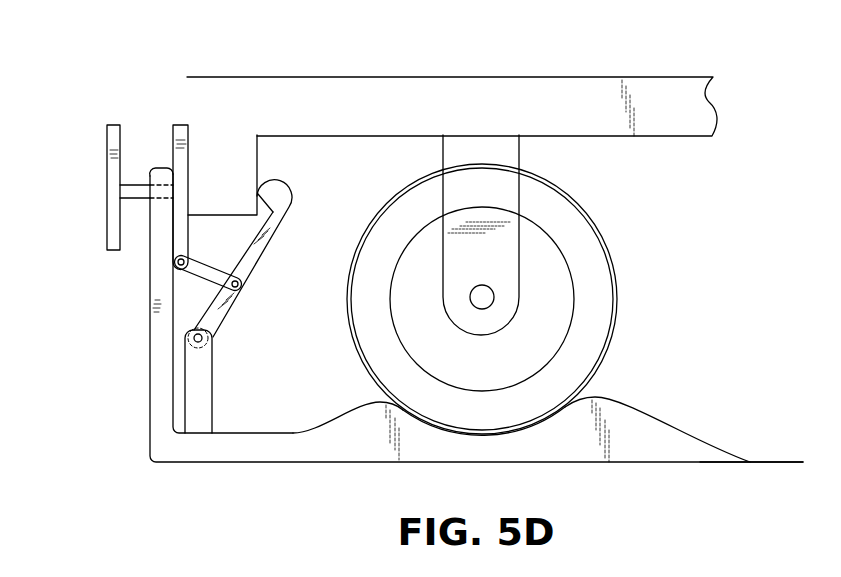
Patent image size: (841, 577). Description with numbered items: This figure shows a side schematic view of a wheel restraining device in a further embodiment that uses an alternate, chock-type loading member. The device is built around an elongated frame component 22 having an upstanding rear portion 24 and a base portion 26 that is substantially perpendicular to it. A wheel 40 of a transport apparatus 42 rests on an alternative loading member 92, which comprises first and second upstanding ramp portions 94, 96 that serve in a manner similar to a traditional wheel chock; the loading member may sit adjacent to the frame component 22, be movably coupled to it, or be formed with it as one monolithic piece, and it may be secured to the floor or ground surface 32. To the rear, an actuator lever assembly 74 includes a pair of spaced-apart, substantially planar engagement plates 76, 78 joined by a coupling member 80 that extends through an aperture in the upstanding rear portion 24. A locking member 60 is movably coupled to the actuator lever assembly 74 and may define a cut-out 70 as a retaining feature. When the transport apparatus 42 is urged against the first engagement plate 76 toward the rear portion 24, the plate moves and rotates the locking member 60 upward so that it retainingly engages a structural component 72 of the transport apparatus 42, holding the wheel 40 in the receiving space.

The elongated frame component 22 is at (136, 419).
The upstanding rear portion 24 is at (157, 317).
The base portion 26 is at (182, 450).
The ground surface 32 is at (773, 462).
The wheel 40 is at (580, 252).
The transport apparatus 42 is at (693, 98).
The locking member 60 is at (297, 187).
The cut-out 70 is at (262, 220).
The structural component 72 is at (233, 183).
The actuator lever assembly 74 is at (141, 90).
The first engagement plate 76 is at (177, 126).
The second engagement plate 78 is at (114, 124).
The coupling member 80 is at (140, 193).
The alternative loading member 92 is at (487, 463).
The first upstanding ramp portion 94 is at (380, 450).
The second upstanding ramp portion 96 is at (628, 452).